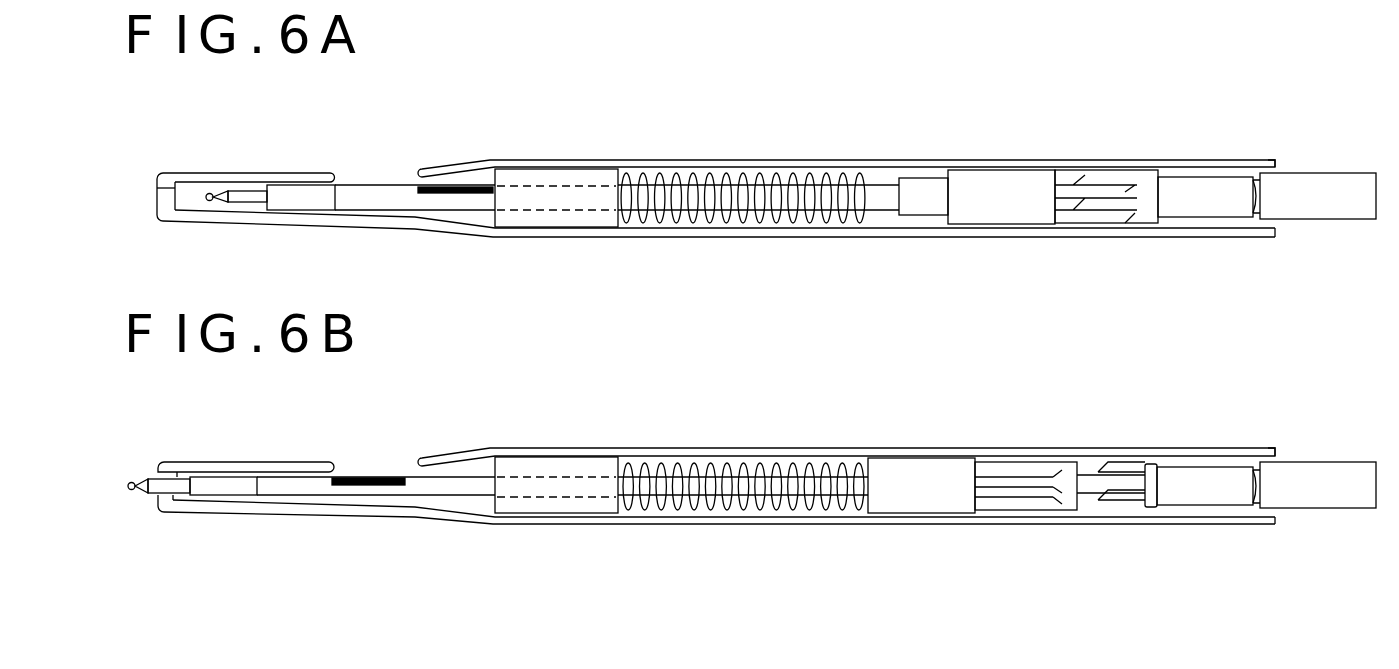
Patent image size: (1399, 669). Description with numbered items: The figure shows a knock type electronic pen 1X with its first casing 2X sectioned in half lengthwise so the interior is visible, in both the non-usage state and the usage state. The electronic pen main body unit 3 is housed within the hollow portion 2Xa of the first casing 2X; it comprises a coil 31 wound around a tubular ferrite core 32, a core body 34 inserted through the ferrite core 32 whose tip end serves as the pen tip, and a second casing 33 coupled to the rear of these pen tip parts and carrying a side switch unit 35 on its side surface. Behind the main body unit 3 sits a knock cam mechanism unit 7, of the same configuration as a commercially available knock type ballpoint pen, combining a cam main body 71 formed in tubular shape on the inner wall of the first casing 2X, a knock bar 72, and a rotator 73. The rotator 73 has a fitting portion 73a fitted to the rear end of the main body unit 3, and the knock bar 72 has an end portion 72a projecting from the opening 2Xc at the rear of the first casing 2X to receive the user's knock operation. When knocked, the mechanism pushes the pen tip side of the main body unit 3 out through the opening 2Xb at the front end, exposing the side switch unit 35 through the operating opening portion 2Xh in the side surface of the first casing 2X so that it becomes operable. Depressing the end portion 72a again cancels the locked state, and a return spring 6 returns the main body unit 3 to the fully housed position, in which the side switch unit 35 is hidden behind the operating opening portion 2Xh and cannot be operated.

In FIG. 6A, the electronic pen 1X is at (1118, 148).
In FIG. 6B, the electronic pen 1X is at (1140, 436).
In FIG. 6A, the first casing 2X is at (703, 169).
In FIG. 6B, the first casing 2X is at (703, 452).
In FIG. 6A, the hollow portion 2Xa is at (886, 173).
In FIG. 6B, the hollow portion 2Xa is at (863, 458).
In FIG. 6A, the opening 2Xb is at (157, 199).
In FIG. 6B, the opening 2Xb is at (150, 495).
In FIG. 6A, the opening 2Xc is at (1281, 168).
In FIG. 6B, the opening 2Xc is at (1281, 456).
In FIG. 6A, the operating opening portion 2Xh is at (372, 176).
In FIG. 6B, the operating opening portion 2Xh is at (405, 463).
In FIG. 6A, the electronic pen main body unit 3 is at (549, 190).
In FIG. 6B, the electronic pen main body unit 3 is at (486, 484).
In FIG. 6A, the return spring 6 is at (769, 220).
In FIG. 6B, the return spring 6 is at (750, 513).
In FIG. 6A, the knock cam mechanism unit 7 is at (1129, 257).
In FIG. 6B, the knock cam mechanism unit 7 is at (1089, 542).
In FIG. 6A, the coil 31 is at (300, 195).
In FIG. 6B, the coil 31 is at (234, 485).
In FIG. 6A, the ferrite core 32 is at (253, 190).
In FIG. 6B, the ferrite core 32 is at (180, 480).
In FIG. 6A, the second casing 33 is at (457, 205).
In FIG. 6B, the second casing 33 is at (453, 487).
In FIG. 6A, the core body 34 is at (212, 192).
In FIG. 6B, the core body 34 is at (130, 480).
In FIG. 6A, the side switch unit 35 is at (457, 200).
In FIG. 6B, the side switch unit 35 is at (364, 477).
In FIG. 6A, the cam main body 71 is at (1098, 210).
In FIG. 6B, the cam main body 71 is at (1125, 500).
In FIG. 6A, the knock bar 72 is at (1203, 218).
In FIG. 6B, the knock bar 72 is at (1203, 507).
In FIG. 6A, the end portion 72a is at (1318, 230).
In FIG. 6B, the end portion 72a is at (1318, 519).
In FIG. 6A, the rotator 73 is at (1003, 208).
In FIG. 6B, the rotator 73 is at (939, 495).
In FIG. 6A, the fitting portion 73a is at (930, 208).
In FIG. 6B, the fitting portion 73a is at (840, 497).